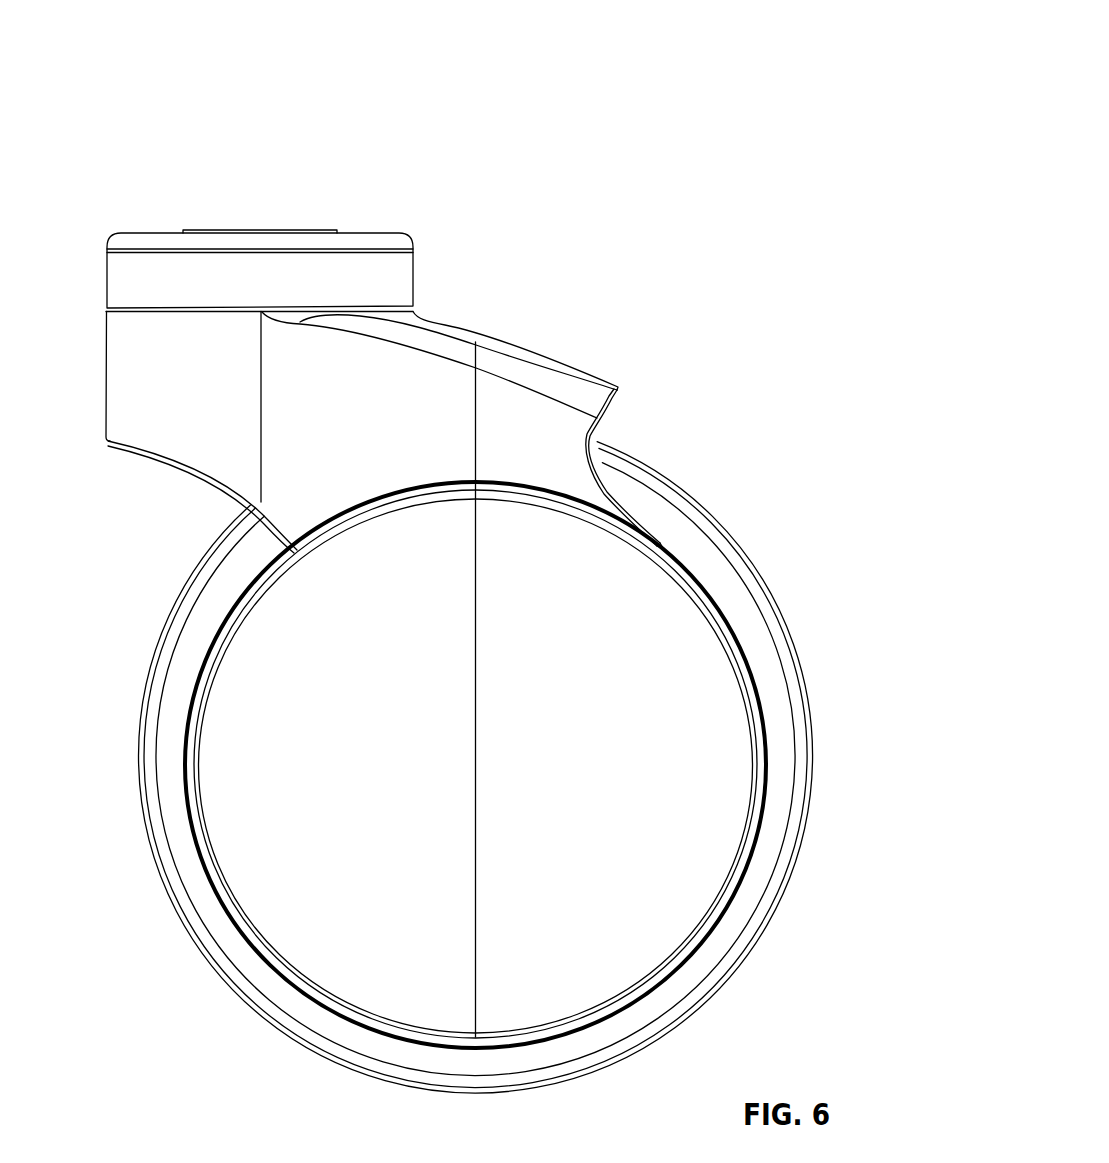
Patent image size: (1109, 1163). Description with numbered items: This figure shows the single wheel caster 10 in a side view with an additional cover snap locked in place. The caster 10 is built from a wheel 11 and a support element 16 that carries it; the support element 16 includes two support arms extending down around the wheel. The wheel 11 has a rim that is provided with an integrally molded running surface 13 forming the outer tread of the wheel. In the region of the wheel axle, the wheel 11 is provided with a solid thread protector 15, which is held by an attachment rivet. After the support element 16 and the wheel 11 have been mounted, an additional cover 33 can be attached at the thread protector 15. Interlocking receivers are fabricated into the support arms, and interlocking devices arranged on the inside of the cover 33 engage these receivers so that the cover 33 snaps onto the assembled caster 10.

The single wheel caster 10 is at (672, 183).
The support element 16 is at (503, 308).
The wheel 11 is at (735, 503).
The running surface 13 is at (820, 635).
The thread protector 15 is at (663, 718).
The cover 33 is at (252, 803).